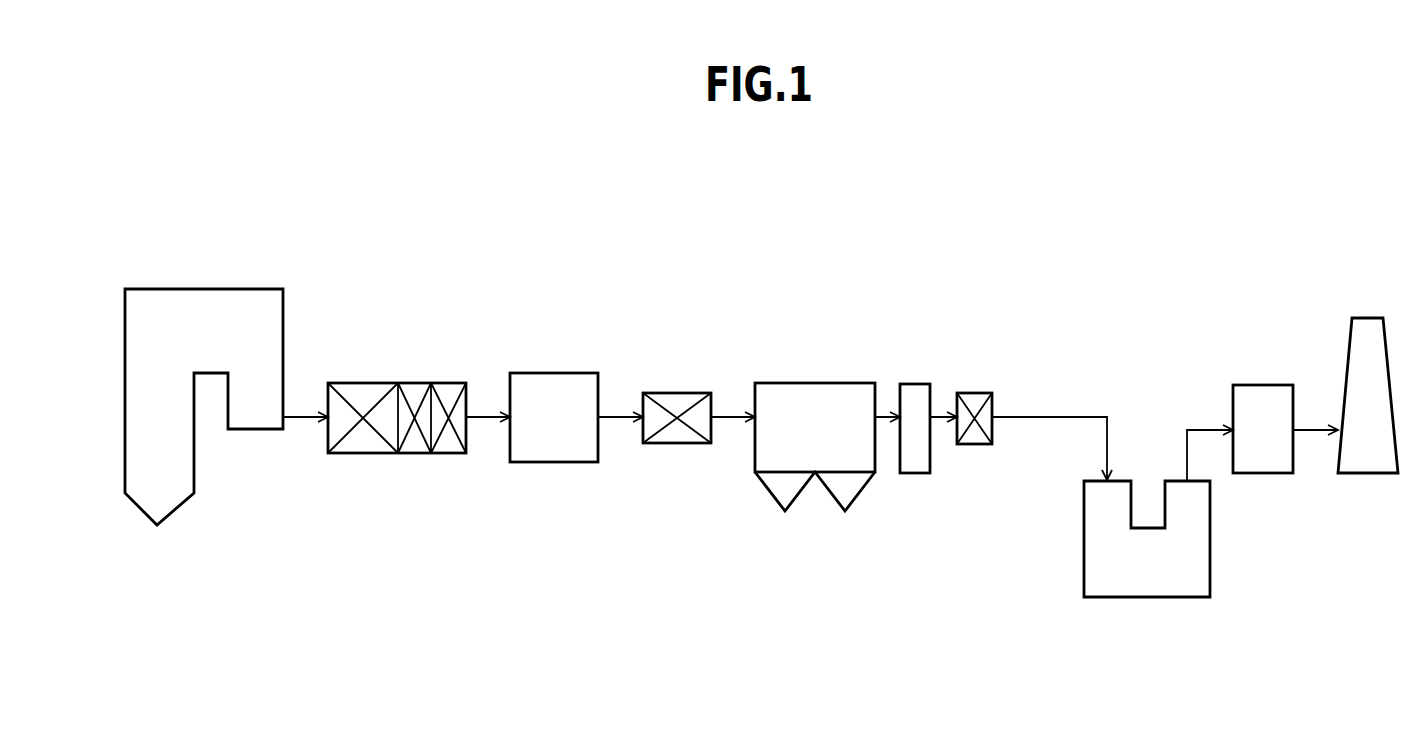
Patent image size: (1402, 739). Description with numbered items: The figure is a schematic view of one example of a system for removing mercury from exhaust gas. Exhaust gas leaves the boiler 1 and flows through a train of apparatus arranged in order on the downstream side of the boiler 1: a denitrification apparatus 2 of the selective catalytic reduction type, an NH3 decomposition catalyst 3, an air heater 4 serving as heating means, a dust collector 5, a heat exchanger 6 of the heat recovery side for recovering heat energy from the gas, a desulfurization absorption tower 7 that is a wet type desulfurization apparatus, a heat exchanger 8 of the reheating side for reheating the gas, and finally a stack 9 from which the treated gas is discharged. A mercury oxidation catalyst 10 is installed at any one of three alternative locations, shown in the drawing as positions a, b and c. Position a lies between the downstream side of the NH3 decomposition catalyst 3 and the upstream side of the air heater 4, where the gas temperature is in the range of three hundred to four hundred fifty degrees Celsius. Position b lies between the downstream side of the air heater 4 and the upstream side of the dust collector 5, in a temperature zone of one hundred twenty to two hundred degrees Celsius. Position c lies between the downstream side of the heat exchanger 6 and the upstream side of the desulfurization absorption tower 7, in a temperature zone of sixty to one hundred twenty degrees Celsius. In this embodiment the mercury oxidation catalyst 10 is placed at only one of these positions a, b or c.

The boiler 1 is at (157, 525).
The denitrification apparatus 2 is at (383, 427).
The NH3 decomposition catalyst 3 is at (415, 383).
The mercury oxidation catalyst a is at (447, 453).
The air heater 4 is at (540, 462).
The mercury oxidation catalyst b is at (675, 443).
The dust collector 5 is at (772, 500).
The heat recovery side heat exchanger 6 is at (915, 473).
The mercury oxidation catalyst c is at (978, 444).
The desulfurization absorption tower 7 is at (1140, 597).
The reheating side heat exchanger 8 is at (1260, 473).
The stack 9 is at (1360, 473).
The mercury oxidation catalyst 10 is at (448, 383).